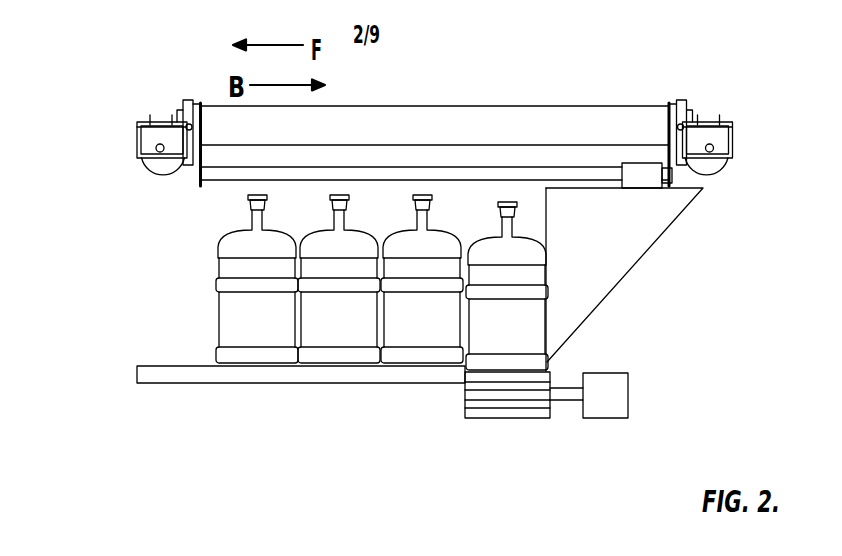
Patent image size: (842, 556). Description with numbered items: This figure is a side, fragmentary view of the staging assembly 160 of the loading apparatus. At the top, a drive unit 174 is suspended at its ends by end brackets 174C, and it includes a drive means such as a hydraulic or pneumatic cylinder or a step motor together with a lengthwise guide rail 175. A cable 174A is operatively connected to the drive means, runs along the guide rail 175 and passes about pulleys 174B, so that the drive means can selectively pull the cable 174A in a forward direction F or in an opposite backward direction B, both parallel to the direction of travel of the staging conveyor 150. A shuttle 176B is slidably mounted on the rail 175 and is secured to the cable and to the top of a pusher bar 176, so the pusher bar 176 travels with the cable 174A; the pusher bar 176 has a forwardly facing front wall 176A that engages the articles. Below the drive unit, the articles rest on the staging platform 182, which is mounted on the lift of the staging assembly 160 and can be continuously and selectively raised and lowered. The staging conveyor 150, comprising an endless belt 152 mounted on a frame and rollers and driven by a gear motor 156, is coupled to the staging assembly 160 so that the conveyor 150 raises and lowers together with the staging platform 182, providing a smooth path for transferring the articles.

The staging assembly 160 is at (537, 52).
The drive unit 174 is at (403, 120).
The guide rail 175 is at (493, 173).
The cable 174A is at (185, 175).
The pulleys 174B is at (155, 165).
The end brackets 174C is at (145, 122).
The pusher bar 176 is at (618, 263).
The front wall 176A is at (547, 212).
The shuttle 176B is at (643, 173).
The staging platform 182 is at (193, 373).
The staging conveyor 150 is at (512, 418).
The endless belt 152 is at (470, 393).
The gear motor 156 is at (605, 408).